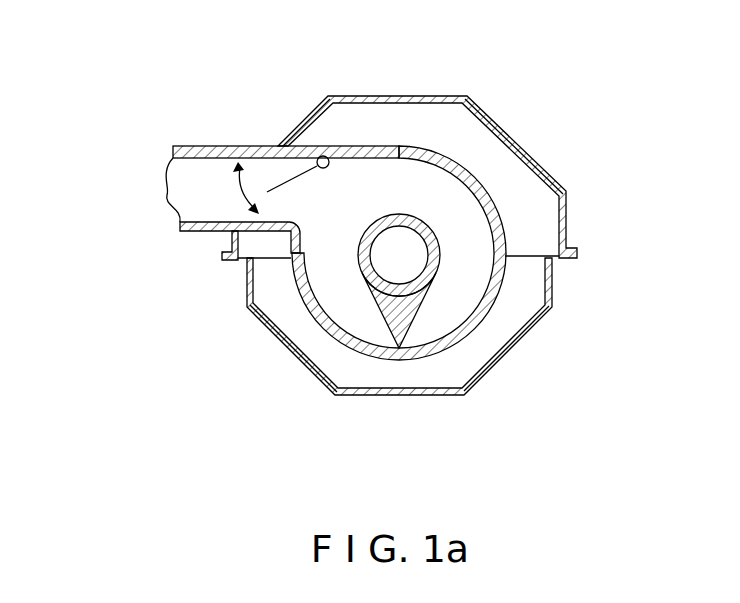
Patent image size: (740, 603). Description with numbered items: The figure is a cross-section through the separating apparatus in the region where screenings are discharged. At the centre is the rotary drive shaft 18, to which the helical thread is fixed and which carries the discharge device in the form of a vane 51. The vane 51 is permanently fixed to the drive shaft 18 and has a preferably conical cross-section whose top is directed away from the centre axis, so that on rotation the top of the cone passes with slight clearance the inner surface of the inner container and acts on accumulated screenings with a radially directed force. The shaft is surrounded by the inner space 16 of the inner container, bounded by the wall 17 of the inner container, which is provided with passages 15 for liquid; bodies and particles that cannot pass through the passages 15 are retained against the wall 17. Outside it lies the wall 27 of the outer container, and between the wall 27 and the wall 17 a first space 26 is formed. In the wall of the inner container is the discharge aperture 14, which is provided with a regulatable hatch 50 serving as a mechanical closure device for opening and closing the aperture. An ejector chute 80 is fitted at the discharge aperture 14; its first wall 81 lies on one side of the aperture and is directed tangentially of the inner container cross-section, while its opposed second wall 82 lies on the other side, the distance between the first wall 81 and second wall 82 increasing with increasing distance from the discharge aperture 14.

The discharge aperture 14 is at (318, 200).
The passages 15 is at (502, 297).
The inner space of the first container 16 is at (486, 241).
The wall of the inner container 17 is at (507, 273).
The drive shaft 18 is at (485, 242).
The first space 26 is at (325, 362).
The wall of the outer container 27 is at (522, 340).
The hatch 50 is at (283, 185).
The vane 51 is at (413, 325).
The ejector chute 80 is at (180, 197).
The first wall 81 is at (195, 146).
The second wall 82 is at (202, 232).